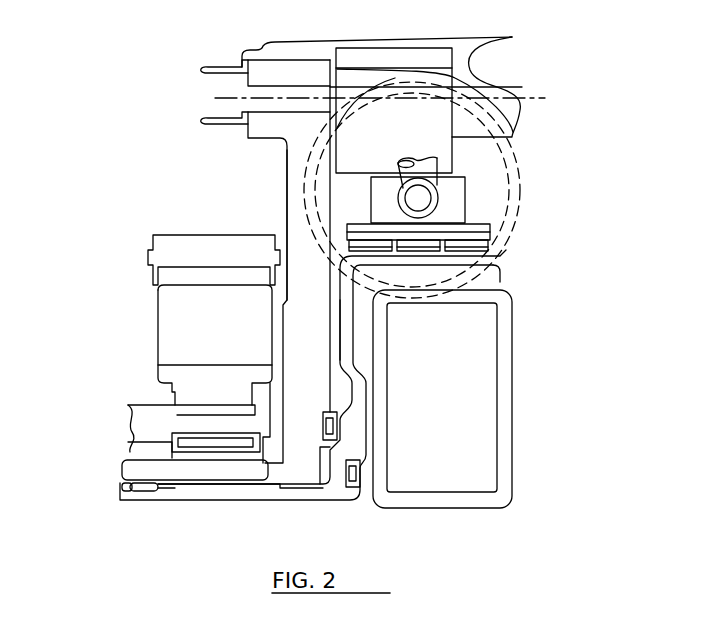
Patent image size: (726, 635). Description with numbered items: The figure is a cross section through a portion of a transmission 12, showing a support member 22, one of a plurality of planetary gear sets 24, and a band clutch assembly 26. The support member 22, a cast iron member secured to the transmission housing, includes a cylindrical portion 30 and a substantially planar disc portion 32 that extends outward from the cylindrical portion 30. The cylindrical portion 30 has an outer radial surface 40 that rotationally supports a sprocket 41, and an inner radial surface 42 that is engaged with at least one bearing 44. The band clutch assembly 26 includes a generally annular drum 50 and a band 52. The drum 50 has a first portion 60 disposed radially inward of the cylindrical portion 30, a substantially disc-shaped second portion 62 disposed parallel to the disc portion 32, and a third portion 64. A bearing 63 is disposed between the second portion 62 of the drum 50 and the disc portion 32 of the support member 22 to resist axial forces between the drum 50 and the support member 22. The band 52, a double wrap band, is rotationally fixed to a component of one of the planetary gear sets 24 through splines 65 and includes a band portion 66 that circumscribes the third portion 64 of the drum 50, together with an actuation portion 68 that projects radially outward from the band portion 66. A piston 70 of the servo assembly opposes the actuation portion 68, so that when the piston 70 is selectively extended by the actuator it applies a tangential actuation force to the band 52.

The transmission 12 is at (110, 76).
The support member 22 is at (266, 47).
The planetary gear sets 24 is at (532, 425).
The band clutch assembly 26 is at (535, 130).
The cylindrical portion 30 is at (140, 472).
The disc portion 32 is at (287, 167).
The outer radial surface 40 is at (134, 432).
The sprocket 41 is at (148, 326).
The inner radial surface 42 is at (123, 487).
The bearing 44 is at (150, 486).
The drum 50 is at (506, 252).
The band 52 is at (466, 214).
The first portion 60 is at (230, 493).
The second portion 62 is at (340, 328).
The bearing 63 is at (328, 427).
The third portion 64 is at (365, 232).
The splines 65 is at (285, 484).
The band portion 66 is at (490, 230).
The actuation portion 68 is at (380, 200).
The piston 70 is at (440, 182).